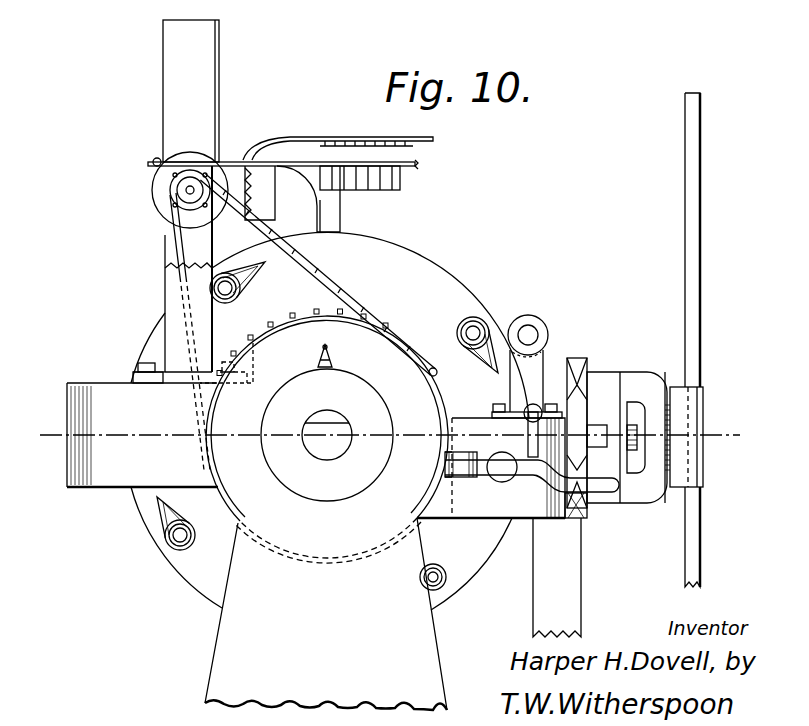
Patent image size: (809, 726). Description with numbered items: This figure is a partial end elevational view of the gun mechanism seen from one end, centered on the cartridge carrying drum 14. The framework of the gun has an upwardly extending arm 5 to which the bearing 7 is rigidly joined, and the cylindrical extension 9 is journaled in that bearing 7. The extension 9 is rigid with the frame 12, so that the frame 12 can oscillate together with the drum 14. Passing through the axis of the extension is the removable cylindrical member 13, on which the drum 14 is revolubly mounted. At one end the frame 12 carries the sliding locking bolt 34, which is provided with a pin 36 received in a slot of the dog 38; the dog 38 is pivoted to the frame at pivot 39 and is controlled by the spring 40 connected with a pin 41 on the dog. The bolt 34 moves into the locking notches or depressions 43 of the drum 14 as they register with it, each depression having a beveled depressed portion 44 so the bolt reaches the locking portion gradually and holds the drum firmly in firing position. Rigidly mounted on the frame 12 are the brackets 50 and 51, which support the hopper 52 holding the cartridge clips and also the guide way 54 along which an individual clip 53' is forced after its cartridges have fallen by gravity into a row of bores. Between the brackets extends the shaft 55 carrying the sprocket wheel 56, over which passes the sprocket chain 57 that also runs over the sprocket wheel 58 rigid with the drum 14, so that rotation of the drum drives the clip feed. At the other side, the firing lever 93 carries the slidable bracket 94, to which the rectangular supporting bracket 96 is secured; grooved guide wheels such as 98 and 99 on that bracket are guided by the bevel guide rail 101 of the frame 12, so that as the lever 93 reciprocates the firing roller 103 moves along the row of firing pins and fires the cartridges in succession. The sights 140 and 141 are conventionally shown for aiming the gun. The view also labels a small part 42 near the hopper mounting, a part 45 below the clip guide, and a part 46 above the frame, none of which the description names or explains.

The arm 5 is at (232, 632).
The bearing 7 is at (263, 505).
The cylindrical extension 9 is at (278, 412).
The frame 12 is at (82, 455).
The removable cylindrical member 13 is at (346, 440).
The cartridge carrying drum 14 is at (425, 270).
The sliding locking bolt 34 is at (494, 457).
The pin 36 is at (505, 458).
The dog 38 is at (484, 470).
The pivot 39 is at (458, 480).
The spring 40 is at (152, 195).
The pin 41 is at (522, 418).
The bolt 42 is at (156, 160).
The locking notches or depressions 43 is at (232, 296).
The beveled depressed portion 44 is at (256, 275).
The block 45 is at (330, 213).
The collar 46 is at (546, 326).
The bracket 50 is at (214, 250).
The bracket 51 is at (165, 325).
The hopper 52 is at (220, 80).
The individual clip 53' is at (360, 148).
The guide way 54 is at (298, 150).
The shaft 55 is at (190, 192).
The sprocket wheel 56 is at (170, 214).
The sprocket chain 57 is at (176, 245).
The sprocket wheel 58 is at (366, 318).
The firing lever 93 is at (693, 280).
The slidable bracket 94 is at (702, 432).
The rectangular supporting bracket 96 is at (612, 385).
The guide wheel 98 is at (585, 510).
The guide wheel 99 is at (582, 368).
The bevel guide rail 101 is at (572, 440).
The firing roller 103 is at (640, 438).
The sight 140 is at (334, 362).
The sight 141 is at (132, 374).